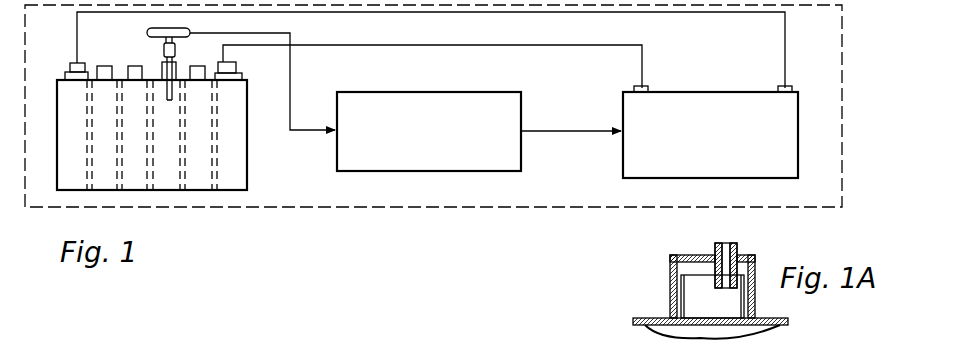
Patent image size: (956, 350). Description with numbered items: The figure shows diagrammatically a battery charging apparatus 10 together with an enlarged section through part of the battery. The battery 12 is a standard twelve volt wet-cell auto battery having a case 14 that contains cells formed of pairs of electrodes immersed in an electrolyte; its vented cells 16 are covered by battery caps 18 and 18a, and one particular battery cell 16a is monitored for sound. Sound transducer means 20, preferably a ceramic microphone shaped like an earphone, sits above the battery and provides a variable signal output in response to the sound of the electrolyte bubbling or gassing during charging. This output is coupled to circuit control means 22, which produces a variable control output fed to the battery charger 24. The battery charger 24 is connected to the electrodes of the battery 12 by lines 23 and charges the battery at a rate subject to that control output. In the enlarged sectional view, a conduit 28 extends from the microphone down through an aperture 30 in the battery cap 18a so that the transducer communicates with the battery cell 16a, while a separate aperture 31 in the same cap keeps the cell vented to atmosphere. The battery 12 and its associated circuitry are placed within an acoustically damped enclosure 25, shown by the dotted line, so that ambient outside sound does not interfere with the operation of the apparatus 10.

In FIG. 1, the battery charging apparatus 10 is at (456, 126).
In FIG. 1, the battery 12 is at (186, 149).
In FIG. 1, the case 14 is at (232, 180).
In FIG. 1, the vented cells 16 is at (187, 108).
In FIG. 1, the battery cell 16a is at (171, 178).
In FIG. 1, the battery cap 18 is at (65, 75).
In FIG. 1, the battery cap 18a is at (163, 62).
In FIG. 1A, the battery cap 18a is at (658, 310).
In FIG. 1, the sound transducer means 20 is at (147, 33).
In FIG. 1, the circuit control means 22 is at (437, 78).
In FIG. 1, the lines 23 is at (462, 18).
In FIG. 1, the battery charger 24 is at (730, 76).
In FIG. 1, the acoustically damped enclosure 25 is at (848, 88).
In FIG. 1A, the conduit 28 is at (737, 249).
In FIG. 1A, the aperture 30 is at (672, 297).
In FIG. 1A, the aperture 31 is at (695, 257).